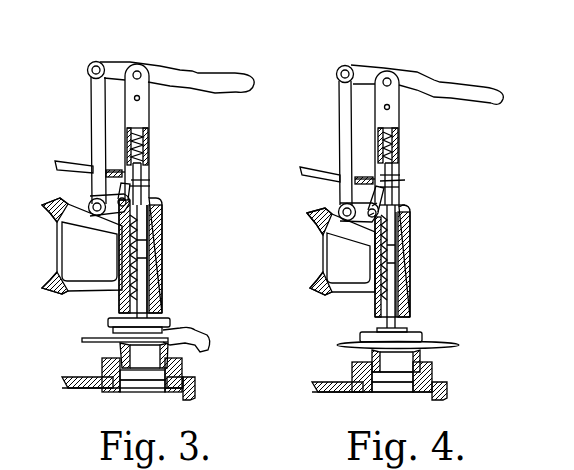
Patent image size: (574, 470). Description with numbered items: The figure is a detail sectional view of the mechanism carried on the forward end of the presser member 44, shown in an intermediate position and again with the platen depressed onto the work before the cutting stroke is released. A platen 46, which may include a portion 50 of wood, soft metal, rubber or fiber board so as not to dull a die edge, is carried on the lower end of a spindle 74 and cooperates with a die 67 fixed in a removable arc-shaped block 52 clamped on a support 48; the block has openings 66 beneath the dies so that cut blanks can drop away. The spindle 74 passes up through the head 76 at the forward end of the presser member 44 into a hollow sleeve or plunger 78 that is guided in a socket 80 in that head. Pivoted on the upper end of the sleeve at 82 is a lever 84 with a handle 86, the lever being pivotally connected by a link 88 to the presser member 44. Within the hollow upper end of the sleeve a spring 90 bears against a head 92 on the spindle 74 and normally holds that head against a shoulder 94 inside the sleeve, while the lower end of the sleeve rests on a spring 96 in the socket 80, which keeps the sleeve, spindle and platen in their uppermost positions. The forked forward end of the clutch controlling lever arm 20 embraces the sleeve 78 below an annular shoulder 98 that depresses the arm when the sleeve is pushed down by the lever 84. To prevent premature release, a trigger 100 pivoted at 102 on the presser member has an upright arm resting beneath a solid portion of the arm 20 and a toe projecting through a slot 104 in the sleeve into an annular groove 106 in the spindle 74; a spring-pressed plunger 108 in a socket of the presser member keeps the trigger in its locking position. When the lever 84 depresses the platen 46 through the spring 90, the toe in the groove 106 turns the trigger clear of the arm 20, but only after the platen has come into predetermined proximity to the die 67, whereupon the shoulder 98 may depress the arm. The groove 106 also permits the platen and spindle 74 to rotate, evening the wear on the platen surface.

In FIG. 3, the clutch controlling lever arm 20 is at (58, 161).
In FIG. 4, the clutch controlling lever arm 20 is at (302, 175).
In FIG. 3, the presser member 44 is at (78, 256).
In FIG. 4, the presser member 44 is at (345, 270).
In FIG. 3, the platen 46 is at (172, 322).
In FIG. 4, the platen 46 is at (424, 334).
In FIG. 3, the support 48 is at (80, 386).
In FIG. 4, the support 48 is at (345, 395).
In FIG. 3, the platen portion 50 is at (163, 330).
In FIG. 4, the platen portion 50 is at (430, 344).
In FIG. 3, the arc-shaped block 52 is at (102, 367).
In FIG. 4, the arc-shaped block 52 is at (352, 372).
In FIG. 3, the openings 66 is at (190, 392).
In FIG. 4, the openings 66 is at (432, 384).
In FIG. 3, the die 67 is at (170, 354).
In FIG. 4, the die 67 is at (422, 355).
In FIG. 3, the spindle 74 is at (150, 296).
In FIG. 4, the spindle 74 is at (392, 312).
In FIG. 3, the head 76 is at (160, 220).
In FIG. 4, the head 76 is at (410, 236).
In FIG. 3, the sleeve or plunger 78 is at (131, 185).
In FIG. 4, the sleeve or plunger 78 is at (412, 242).
In FIG. 3, the socket 80 is at (163, 278).
In FIG. 4, the socket 80 is at (414, 282).
In FIG. 3, the pivot 82 is at (141, 67).
In FIG. 4, the pivot 82 is at (388, 70).
In FIG. 3, the lever 84 is at (178, 72).
In FIG. 4, the lever 84 is at (415, 82).
In FIG. 3, the handle 86 is at (228, 80).
In FIG. 4, the handle 86 is at (468, 90).
In FIG. 3, the link 88 is at (95, 107).
In FIG. 4, the link 88 is at (346, 110).
In FIG. 3, the spring 90 is at (150, 140).
In FIG. 4, the spring 90 is at (400, 142).
In FIG. 3, the head 92 is at (150, 148).
In FIG. 4, the head 92 is at (400, 160).
In FIG. 3, the shoulder 94 is at (149, 162).
In FIG. 4, the shoulder 94 is at (388, 184).
In FIG. 3, the spring 96 is at (160, 250).
In FIG. 4, the spring 96 is at (404, 264).
In FIG. 4, the annular shoulder 98 is at (405, 180).
In FIG. 3, the trigger 100 is at (150, 186).
In FIG. 4, the trigger 100 is at (399, 187).
In FIG. 4, the trigger pivot 102 is at (372, 206).
In FIG. 3, the slot 104 is at (150, 180).
In FIG. 4, the slot 104 is at (400, 175).
In FIG. 4, the annular groove 106 is at (405, 205).
In FIG. 4, the spring-pressed plunger 108 is at (368, 216).